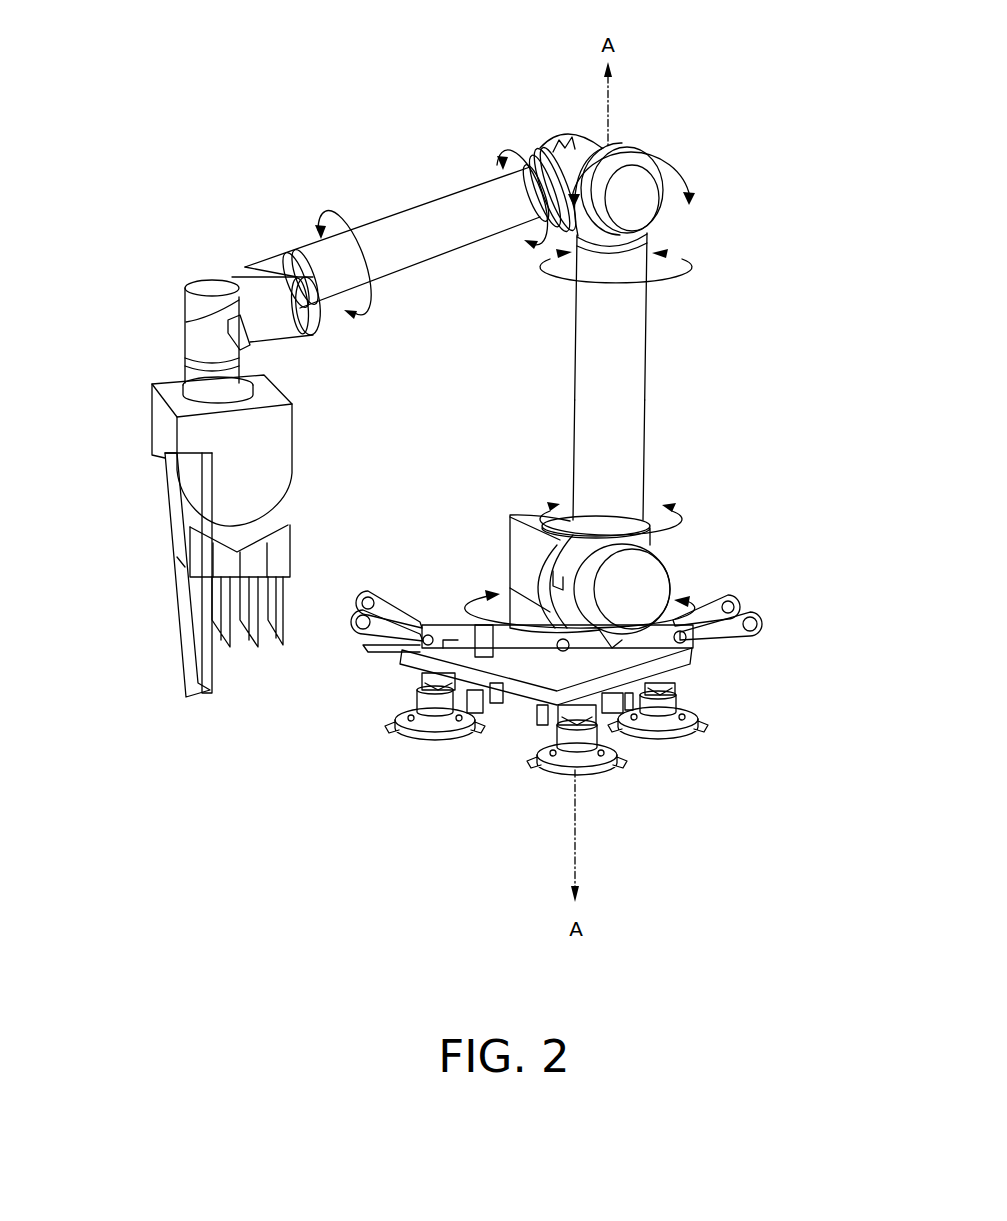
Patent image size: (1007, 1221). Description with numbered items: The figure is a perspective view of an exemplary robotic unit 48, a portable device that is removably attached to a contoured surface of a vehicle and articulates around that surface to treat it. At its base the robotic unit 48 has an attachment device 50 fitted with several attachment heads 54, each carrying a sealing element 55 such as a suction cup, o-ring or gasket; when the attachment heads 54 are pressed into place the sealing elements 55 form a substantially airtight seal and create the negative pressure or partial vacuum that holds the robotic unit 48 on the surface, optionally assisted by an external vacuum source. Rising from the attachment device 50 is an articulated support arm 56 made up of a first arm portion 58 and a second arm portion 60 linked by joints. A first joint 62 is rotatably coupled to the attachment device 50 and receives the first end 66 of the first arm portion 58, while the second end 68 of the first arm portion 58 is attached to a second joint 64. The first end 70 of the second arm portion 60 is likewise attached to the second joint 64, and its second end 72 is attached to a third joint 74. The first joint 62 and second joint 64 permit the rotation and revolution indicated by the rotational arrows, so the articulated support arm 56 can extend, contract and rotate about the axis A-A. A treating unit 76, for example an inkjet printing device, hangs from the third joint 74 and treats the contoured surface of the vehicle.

The robotic unit 48 is at (192, 142).
The attachment device 50 is at (506, 737).
The attachment head 54 is at (395, 711).
The sealing element 55 is at (428, 729).
The articulated support arm 56 is at (709, 291).
The first arm portion 58 is at (648, 357).
The second arm portion 60 is at (453, 213).
The first joint 62 is at (666, 568).
The second joint 64 is at (613, 155).
The first end 66 is at (645, 465).
The second end 68 is at (640, 252).
The first end 70 is at (500, 183).
The second end 72 is at (309, 262).
The third joint 74 is at (250, 270).
The treating unit 76 is at (153, 424).